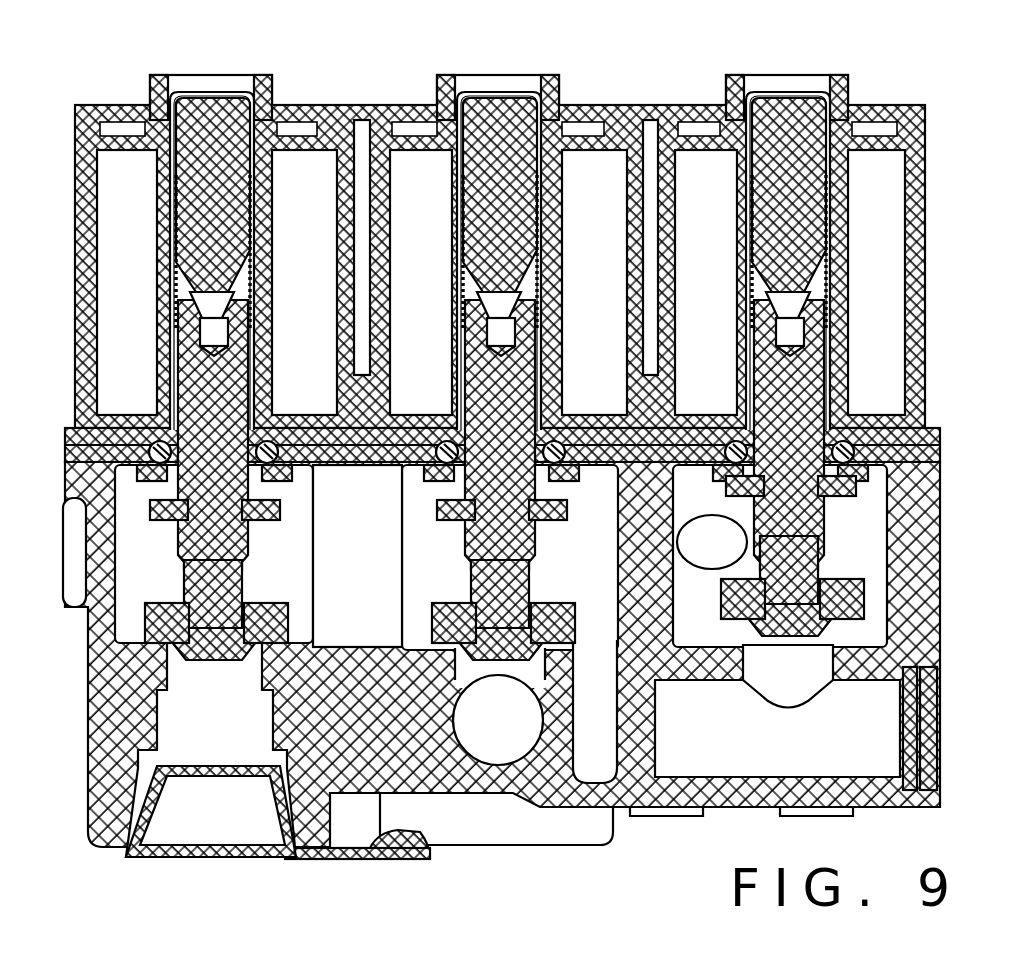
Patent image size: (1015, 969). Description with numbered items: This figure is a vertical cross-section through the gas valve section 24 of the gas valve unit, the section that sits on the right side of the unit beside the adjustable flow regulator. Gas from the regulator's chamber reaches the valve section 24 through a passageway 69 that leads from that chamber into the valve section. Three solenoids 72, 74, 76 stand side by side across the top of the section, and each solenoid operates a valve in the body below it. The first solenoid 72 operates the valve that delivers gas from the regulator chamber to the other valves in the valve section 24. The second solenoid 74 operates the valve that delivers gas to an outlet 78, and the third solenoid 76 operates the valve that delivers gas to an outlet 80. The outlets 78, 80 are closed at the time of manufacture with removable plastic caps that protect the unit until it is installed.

The valve section 24 is at (922, 602).
The third solenoid 76 is at (210, 93).
The second solenoid 74 is at (499, 93).
The first solenoid 72 is at (789, 93).
The outlet 78 is at (508, 722).
The passageway 69 is at (730, 548).
The outlet 80 is at (200, 810).